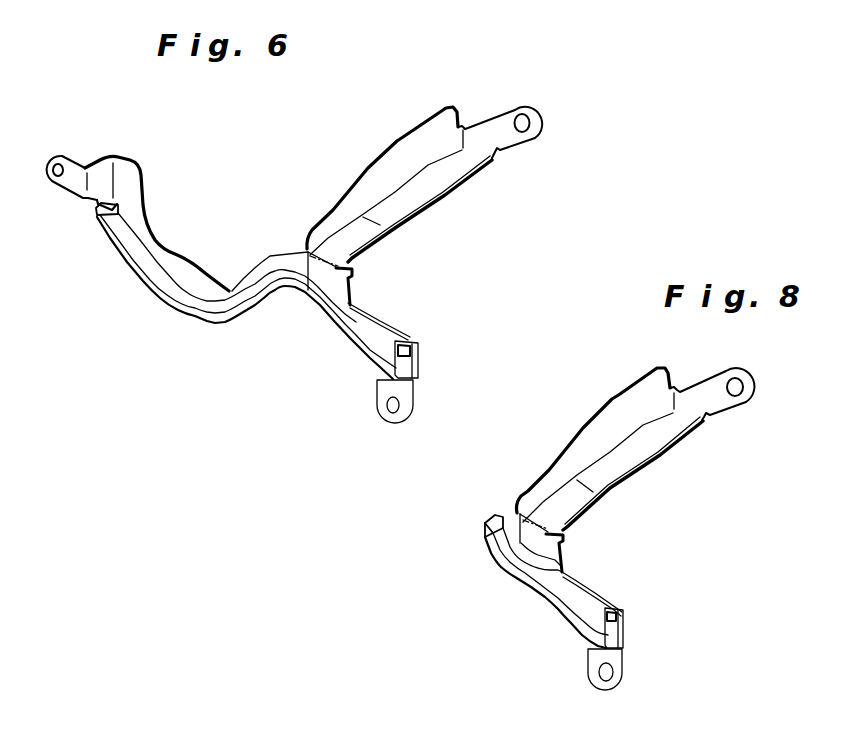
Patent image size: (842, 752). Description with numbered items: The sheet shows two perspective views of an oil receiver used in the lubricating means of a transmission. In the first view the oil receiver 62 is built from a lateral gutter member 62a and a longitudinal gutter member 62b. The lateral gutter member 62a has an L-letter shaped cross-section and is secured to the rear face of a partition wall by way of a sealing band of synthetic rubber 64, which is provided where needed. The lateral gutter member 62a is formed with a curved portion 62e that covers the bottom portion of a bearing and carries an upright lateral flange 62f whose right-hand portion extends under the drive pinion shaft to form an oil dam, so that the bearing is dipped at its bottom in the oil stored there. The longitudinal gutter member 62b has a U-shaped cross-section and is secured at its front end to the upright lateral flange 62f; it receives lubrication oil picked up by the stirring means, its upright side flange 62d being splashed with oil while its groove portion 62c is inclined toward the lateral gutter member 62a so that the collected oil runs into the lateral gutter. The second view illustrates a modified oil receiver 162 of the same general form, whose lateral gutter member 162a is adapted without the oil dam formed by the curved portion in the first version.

In FIG. 6, the oil receiver 62 is at (318, 209).
In FIG. 6, the lateral gutter member 62a is at (377, 327).
In FIG. 6, the longitudinal gutter member 62b is at (486, 166).
In FIG. 6, the groove portion 62c is at (380, 239).
In FIG. 6, the upright side flange 62d is at (407, 145).
In FIG. 6, the curved portion 62e is at (137, 227).
In FIG. 6, the upright lateral flange 62f is at (193, 275).
In FIG. 6, the sealing band of synthetic rubber 64 is at (338, 331).
In FIG. 8, the oil receiver 162 is at (632, 487).
In FIG. 8, the lateral gutter member 162a is at (593, 598).